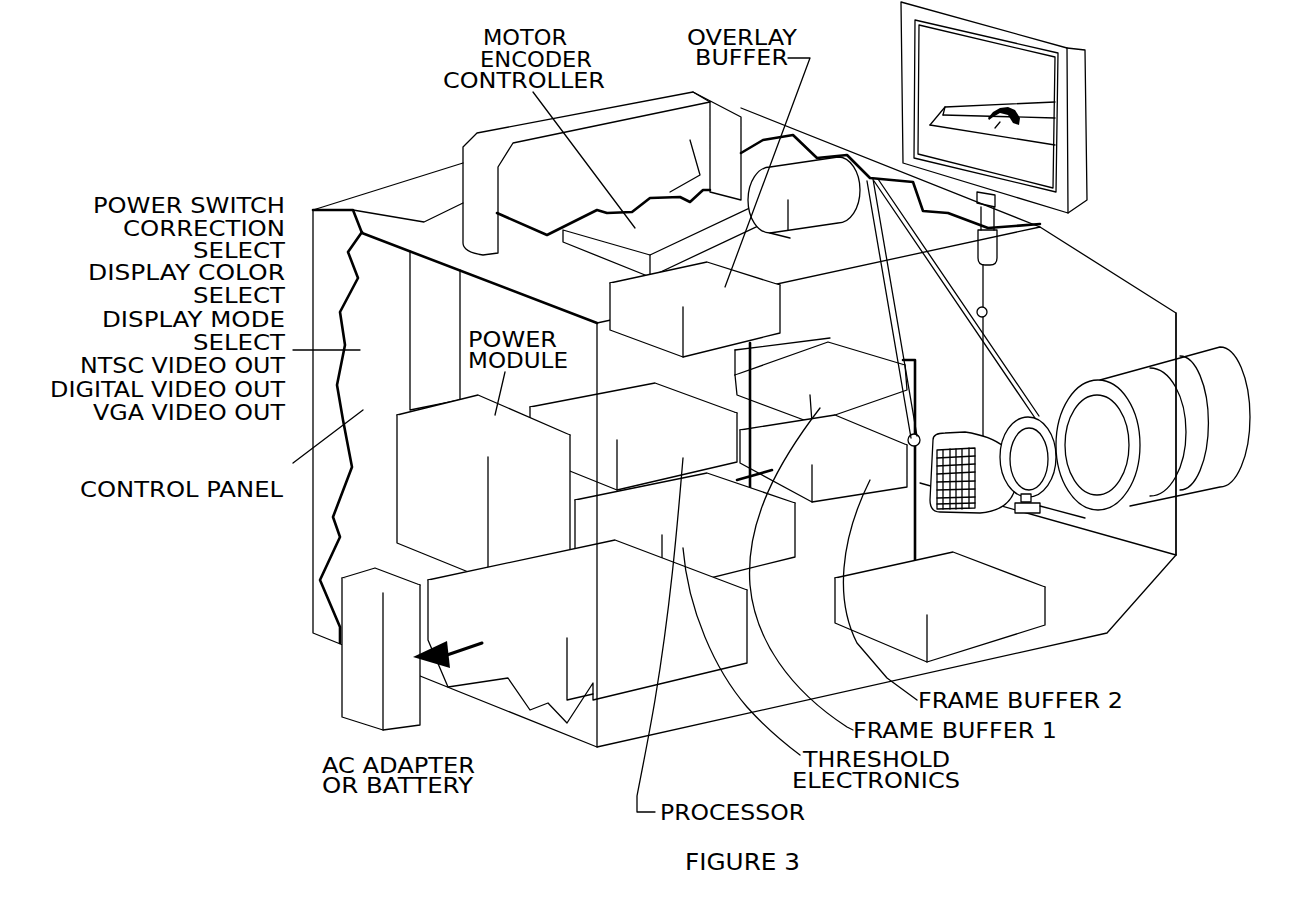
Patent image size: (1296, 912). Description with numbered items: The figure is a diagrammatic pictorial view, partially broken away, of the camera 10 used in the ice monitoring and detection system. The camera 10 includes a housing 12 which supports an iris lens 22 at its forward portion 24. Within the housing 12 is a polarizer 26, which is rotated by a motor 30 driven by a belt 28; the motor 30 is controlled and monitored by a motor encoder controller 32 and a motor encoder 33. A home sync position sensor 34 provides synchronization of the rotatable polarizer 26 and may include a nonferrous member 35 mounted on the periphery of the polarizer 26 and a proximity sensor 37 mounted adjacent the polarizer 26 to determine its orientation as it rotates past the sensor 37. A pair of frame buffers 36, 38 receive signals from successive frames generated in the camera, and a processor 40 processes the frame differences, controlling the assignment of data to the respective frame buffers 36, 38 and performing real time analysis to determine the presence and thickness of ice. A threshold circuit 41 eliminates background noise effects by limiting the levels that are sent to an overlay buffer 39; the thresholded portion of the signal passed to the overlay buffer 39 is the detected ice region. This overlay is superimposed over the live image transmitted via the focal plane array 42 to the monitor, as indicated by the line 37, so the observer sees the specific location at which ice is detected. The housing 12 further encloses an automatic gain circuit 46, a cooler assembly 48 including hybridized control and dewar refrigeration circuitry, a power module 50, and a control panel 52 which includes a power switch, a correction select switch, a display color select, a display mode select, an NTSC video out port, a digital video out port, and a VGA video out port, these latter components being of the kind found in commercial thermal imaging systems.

The camera 10 is at (377, 200).
The housing 12 is at (315, 548).
The iris lens 22 is at (1219, 443).
The forward portion 24 is at (1176, 530).
The polarizer 26 is at (1033, 425).
The belt 28 is at (990, 347).
The motor 30 is at (794, 220).
The motor encoder controller 32 is at (790, 238).
The motor encoder 33 is at (691, 232).
The home sync position sensor 34 is at (1033, 513).
The nonferrous member 35 is at (1040, 508).
The frame buffer 36 is at (905, 377).
The proximity sensor 37 is at (985, 277).
The frame buffer 38 is at (813, 503).
The overlay buffer 39 is at (780, 315).
The processor 40 is at (790, 533).
The threshold circuit 41 is at (607, 435).
The focal plane array 42 is at (975, 500).
The automatic gain circuit 46 is at (937, 605).
The cooler assembly 48 is at (605, 670).
The power module 50 is at (502, 522).
The control panel 52 is at (421, 345).